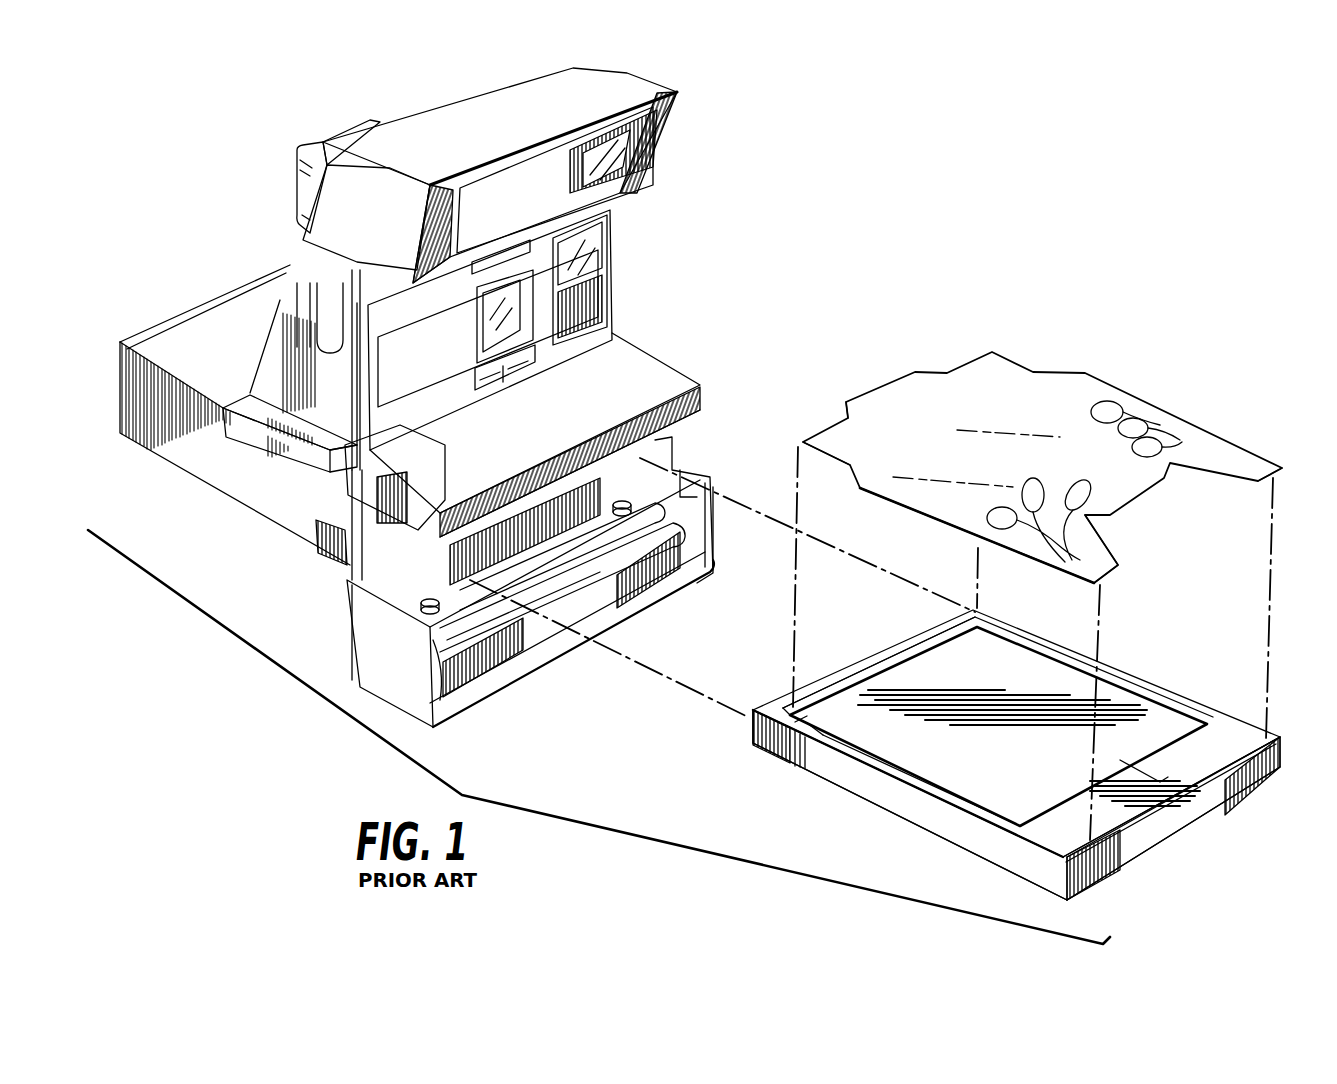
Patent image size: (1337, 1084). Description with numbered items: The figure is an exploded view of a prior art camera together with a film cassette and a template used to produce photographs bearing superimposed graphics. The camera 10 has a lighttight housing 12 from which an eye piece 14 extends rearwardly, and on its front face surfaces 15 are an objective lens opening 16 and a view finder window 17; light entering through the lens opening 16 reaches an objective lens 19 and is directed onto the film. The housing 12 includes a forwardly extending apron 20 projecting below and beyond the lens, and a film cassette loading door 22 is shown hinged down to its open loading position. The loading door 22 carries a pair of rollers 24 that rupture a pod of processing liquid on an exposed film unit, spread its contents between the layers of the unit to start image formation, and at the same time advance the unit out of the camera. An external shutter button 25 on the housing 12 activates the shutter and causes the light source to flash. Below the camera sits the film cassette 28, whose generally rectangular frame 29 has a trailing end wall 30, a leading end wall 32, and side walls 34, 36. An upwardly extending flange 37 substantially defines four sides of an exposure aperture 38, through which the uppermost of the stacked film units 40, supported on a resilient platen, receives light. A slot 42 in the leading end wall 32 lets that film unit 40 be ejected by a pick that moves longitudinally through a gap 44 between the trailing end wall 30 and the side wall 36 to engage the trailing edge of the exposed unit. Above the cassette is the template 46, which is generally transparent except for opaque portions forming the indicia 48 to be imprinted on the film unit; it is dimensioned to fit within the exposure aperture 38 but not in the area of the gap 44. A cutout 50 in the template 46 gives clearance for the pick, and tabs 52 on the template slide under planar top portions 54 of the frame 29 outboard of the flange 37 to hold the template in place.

The camera 10 is at (820, 152).
The lighttight housing 12 is at (225, 468).
The eye piece 14 is at (323, 150).
The front face surfaces 15 is at (540, 150).
The objective lens opening 16 is at (495, 337).
The view finder window 17 is at (592, 258).
The objective lens 19 is at (478, 315).
The forwardly extending apron 20 is at (663, 382).
The film cassette loading door 22 is at (380, 630).
The rollers 24 is at (580, 578).
The shutter button 25 is at (410, 505).
The film cassette 28 is at (1232, 712).
The frame 29 is at (830, 772).
The trailing end wall 30 is at (850, 657).
The leading end wall 32 is at (1205, 802).
The side wall 34 is at (1275, 722).
The side wall 36 is at (915, 806).
The upwardly extending flange 37 is at (922, 640).
The exposure aperture 38 is at (988, 660).
The film units 40 is at (1105, 690).
The slot 42 is at (1170, 818).
The gap 44 is at (770, 745).
The template 46 is at (1058, 390).
The indicia 48 is at (962, 392).
The cutout 50 is at (815, 460).
The tabs 52 is at (868, 392).
The planar top portions 54 is at (780, 700).